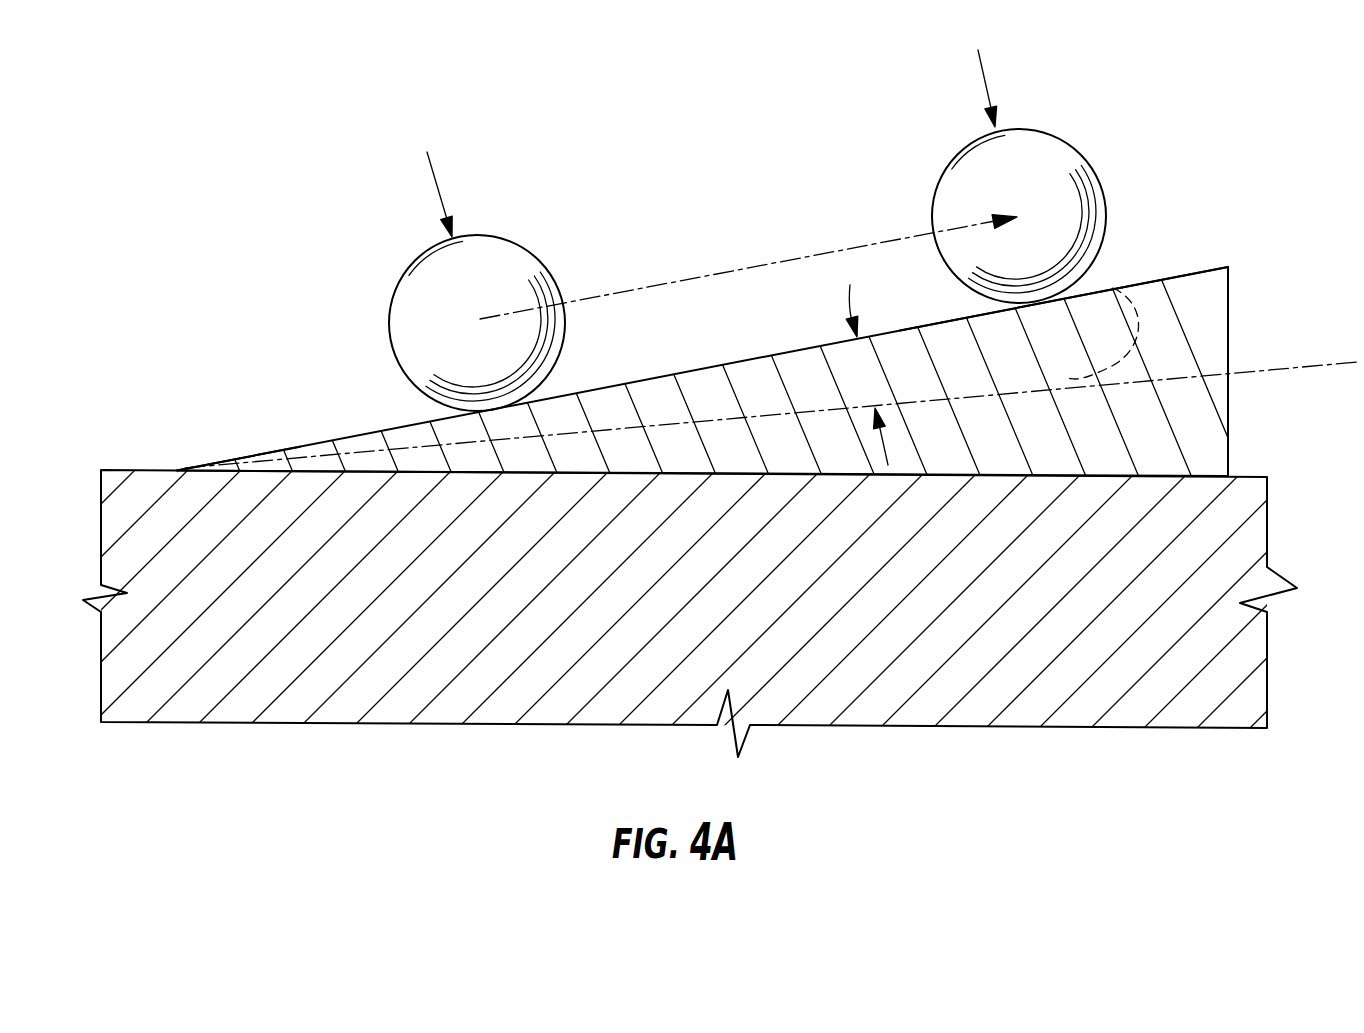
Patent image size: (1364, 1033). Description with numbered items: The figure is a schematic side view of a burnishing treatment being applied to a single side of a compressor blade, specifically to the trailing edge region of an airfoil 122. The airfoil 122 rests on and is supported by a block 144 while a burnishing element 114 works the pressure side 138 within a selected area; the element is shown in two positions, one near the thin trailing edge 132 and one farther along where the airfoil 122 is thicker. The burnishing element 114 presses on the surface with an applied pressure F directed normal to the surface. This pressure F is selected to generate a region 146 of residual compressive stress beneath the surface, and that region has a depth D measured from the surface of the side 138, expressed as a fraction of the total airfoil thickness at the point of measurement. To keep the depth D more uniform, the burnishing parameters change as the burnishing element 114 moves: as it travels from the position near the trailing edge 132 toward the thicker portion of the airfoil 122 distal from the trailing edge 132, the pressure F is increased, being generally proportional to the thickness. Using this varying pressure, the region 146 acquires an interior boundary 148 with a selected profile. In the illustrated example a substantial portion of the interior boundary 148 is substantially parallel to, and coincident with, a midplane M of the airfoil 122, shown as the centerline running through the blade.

The burnishing element 114 is at (509, 248).
The airfoil 122 is at (1205, 322).
The trailing edge 132 is at (172, 468).
The pressure side 138 is at (1175, 275).
The block 144 is at (325, 705).
The region of residual compressive stress 146 is at (706, 394).
The interior boundary 148 is at (1113, 285).
The applied pressure F is at (707, 124).
The depth D is at (874, 298).
The midplane M is at (1283, 372).